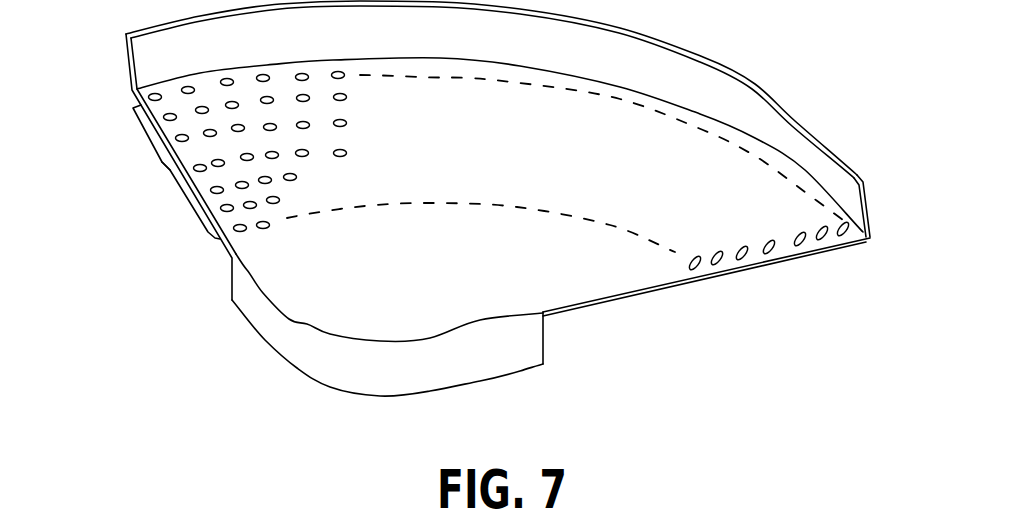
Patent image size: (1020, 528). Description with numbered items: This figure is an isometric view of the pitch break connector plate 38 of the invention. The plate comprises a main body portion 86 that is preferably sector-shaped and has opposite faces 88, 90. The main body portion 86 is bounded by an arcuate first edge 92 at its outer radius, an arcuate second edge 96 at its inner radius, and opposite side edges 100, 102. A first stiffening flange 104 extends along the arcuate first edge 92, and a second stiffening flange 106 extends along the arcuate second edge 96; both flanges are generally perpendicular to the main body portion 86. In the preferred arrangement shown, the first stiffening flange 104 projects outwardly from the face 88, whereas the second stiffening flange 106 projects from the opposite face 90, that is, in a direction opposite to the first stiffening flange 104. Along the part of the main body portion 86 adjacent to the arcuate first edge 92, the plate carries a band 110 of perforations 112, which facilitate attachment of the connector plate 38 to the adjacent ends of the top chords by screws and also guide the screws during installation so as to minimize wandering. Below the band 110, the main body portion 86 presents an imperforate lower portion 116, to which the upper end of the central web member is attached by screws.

The pitch break connector plate 38 is at (749, 74).
The main body portion 86 is at (648, 287).
The face 88 is at (572, 164).
The face 90 is at (587, 304).
The arcuate first edge 92 is at (874, 238).
The arcuate second edge 96 is at (289, 319).
The side edge 100 is at (160, 132).
The side edge 102 is at (773, 260).
The first stiffening flange 104 is at (802, 133).
The second stiffening flange 106 is at (445, 373).
The band of perforations 110 is at (163, 168).
The perforations 112 is at (348, 152).
The imperforate lower portion 116 is at (446, 284).